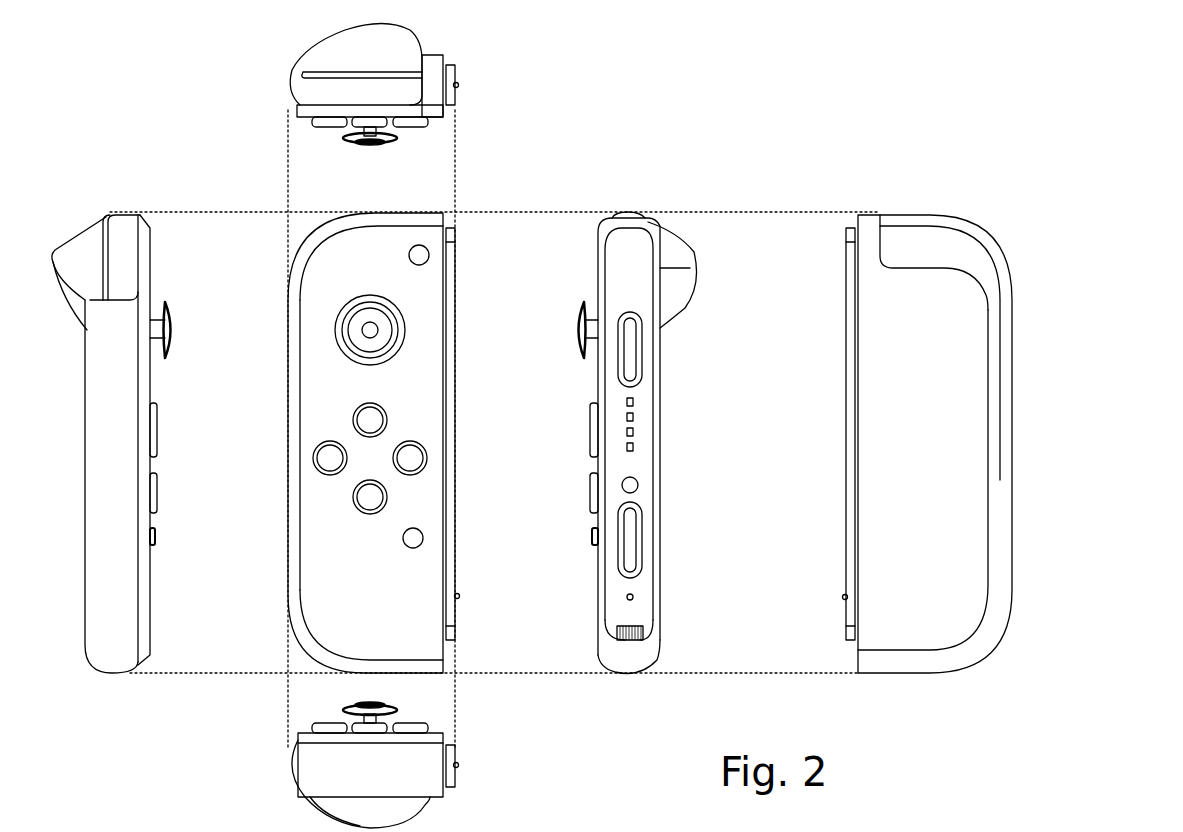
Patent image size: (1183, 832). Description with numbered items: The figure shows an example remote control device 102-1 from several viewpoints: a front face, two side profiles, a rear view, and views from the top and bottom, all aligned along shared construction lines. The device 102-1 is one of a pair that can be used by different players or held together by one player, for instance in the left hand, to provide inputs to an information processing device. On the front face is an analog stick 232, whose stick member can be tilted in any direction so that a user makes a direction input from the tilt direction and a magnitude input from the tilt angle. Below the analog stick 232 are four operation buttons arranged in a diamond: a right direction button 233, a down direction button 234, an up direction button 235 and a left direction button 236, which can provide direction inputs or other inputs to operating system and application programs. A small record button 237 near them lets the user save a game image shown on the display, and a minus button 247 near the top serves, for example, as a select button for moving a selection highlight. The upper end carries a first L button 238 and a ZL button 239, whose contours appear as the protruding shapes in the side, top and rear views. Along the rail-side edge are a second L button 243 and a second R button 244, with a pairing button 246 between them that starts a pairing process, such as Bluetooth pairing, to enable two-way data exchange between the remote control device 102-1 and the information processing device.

The remote control device 102-1 is at (1044, 120).
The analog stick 232 is at (573, 330).
The right direction button 233 is at (410, 458).
The down direction button 234 is at (372, 496).
The up direction button 235 is at (372, 420).
The left direction button 236 is at (330, 458).
The record button 237 is at (422, 538).
The first L button 238 is at (307, 88).
The ZL button 239 is at (350, 45).
The second L (SL-1) button 243 is at (636, 342).
The second R (SR-1) button 244 is at (637, 536).
The pairing button 246 is at (637, 485).
The minus button 247 is at (418, 246).